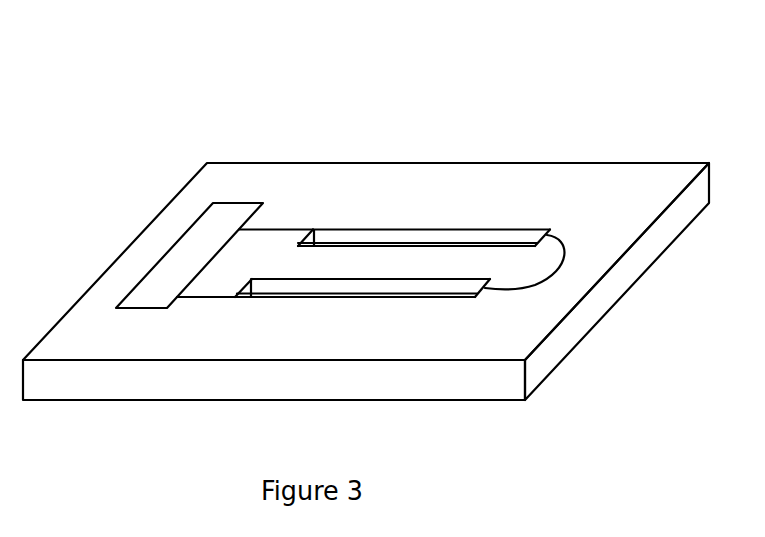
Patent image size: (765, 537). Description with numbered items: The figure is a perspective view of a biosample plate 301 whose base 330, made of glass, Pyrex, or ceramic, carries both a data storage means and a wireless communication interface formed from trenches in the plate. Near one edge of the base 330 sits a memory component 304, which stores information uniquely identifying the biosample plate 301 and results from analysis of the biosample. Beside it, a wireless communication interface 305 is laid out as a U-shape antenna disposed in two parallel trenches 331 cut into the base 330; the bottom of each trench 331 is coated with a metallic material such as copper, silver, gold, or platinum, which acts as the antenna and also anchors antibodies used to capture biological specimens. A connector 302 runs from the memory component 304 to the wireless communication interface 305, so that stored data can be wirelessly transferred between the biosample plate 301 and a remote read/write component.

The biosample plate 301 is at (216, 78).
The connector 302 is at (277, 228).
The memory component 304 is at (183, 237).
The wireless communication interface 305 is at (448, 280).
The base 330 is at (497, 402).
The trenches 331 is at (373, 287).